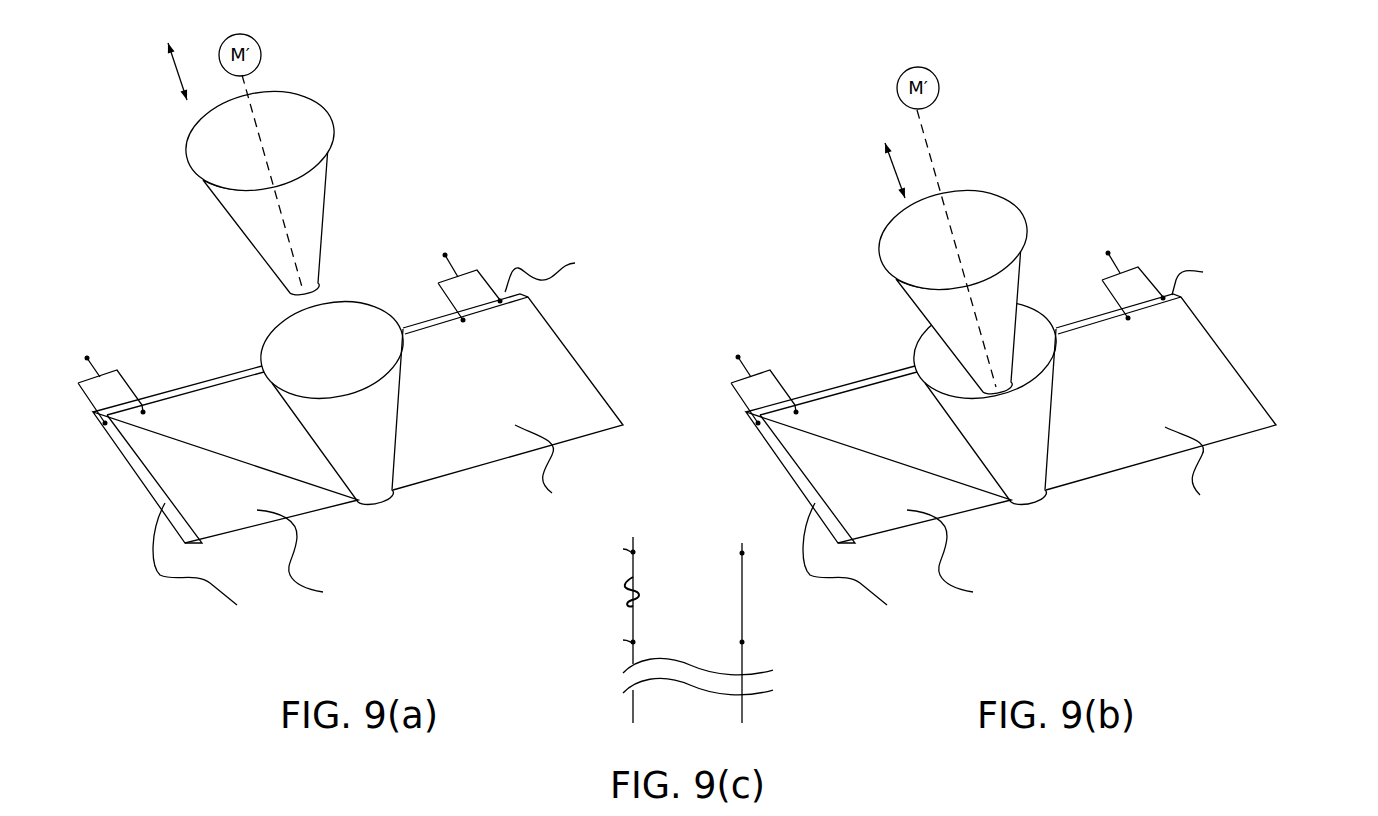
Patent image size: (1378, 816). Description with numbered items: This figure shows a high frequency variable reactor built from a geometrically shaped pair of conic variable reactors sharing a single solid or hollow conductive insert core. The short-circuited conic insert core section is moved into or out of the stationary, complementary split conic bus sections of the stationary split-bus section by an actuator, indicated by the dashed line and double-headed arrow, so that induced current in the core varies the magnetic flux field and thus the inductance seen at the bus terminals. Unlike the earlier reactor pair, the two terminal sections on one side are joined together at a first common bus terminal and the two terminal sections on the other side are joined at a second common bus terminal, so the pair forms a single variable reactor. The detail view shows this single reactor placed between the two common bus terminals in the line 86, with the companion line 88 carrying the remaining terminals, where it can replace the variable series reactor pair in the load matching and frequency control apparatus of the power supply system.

The first wire 86 is at (618, 644).
The second wire 88 is at (752, 647).